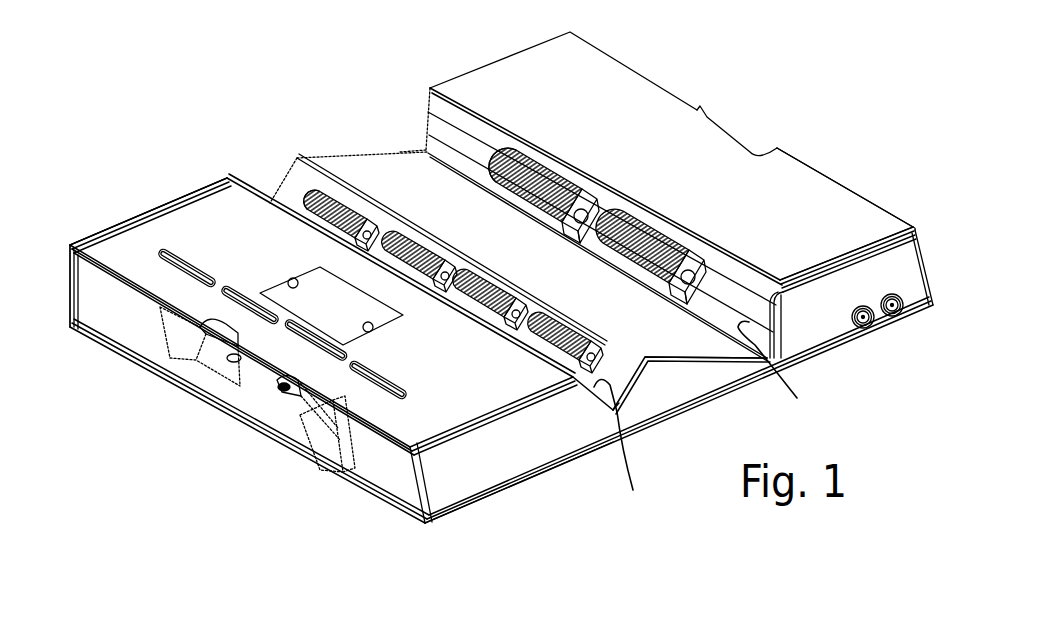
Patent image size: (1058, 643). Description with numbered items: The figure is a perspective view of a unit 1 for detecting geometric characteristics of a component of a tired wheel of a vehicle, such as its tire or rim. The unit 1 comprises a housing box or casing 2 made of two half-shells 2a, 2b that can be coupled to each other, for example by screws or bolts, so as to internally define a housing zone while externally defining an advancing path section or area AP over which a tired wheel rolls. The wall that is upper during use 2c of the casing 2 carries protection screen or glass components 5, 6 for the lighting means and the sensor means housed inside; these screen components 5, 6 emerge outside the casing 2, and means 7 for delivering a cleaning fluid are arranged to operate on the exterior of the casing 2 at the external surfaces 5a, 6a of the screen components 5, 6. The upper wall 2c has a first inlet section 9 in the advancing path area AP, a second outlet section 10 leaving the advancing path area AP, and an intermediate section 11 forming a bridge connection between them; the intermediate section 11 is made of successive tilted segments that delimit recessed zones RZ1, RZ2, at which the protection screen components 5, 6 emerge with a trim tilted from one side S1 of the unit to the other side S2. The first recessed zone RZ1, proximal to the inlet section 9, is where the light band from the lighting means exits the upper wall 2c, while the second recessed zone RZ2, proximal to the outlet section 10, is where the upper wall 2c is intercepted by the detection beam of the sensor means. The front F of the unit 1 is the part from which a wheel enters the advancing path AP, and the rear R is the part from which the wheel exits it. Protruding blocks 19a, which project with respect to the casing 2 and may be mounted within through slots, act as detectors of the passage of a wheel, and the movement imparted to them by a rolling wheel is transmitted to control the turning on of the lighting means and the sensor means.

The unit 1 is at (280, 136).
The housing box or casing 2 is at (530, 460).
The half-shell 2a is at (615, 98).
The half-shell 2b is at (328, 465).
The upper wall 2c is at (734, 231).
The protection screen component 5 is at (383, 236).
The external surface of protection screen component 5a is at (308, 212).
The protection screen component 6 is at (578, 214).
The external surface of protection screen component 6a is at (530, 163).
The means for delivering a cleaning fluid 7 is at (388, 238).
The first inlet section 9 is at (430, 407).
The second outlet section 10 is at (817, 233).
The intermediate section 11 is at (663, 343).
The protruding blocks 19a is at (250, 307).
The advancing path section or area AP is at (760, 247).
The front F is at (202, 318).
The rear R is at (723, 133).
The first recessed zone RZ1 is at (638, 459).
The second recessed zone RZ2 is at (794, 384).
The side of the unit S1 is at (98, 230).
The side of the unit S2 is at (468, 482).